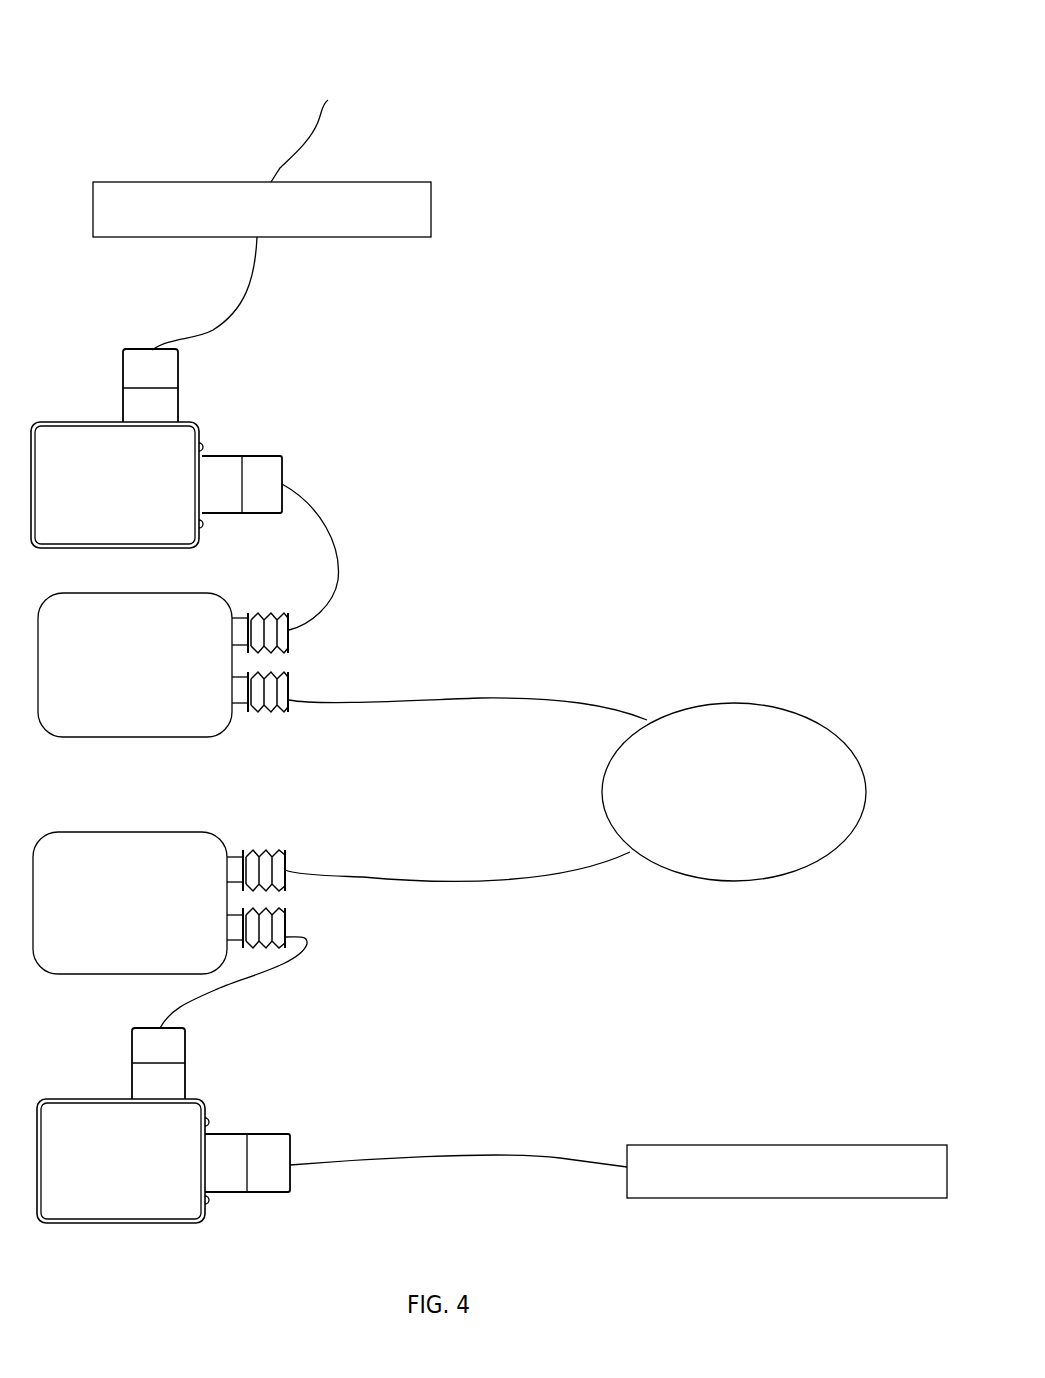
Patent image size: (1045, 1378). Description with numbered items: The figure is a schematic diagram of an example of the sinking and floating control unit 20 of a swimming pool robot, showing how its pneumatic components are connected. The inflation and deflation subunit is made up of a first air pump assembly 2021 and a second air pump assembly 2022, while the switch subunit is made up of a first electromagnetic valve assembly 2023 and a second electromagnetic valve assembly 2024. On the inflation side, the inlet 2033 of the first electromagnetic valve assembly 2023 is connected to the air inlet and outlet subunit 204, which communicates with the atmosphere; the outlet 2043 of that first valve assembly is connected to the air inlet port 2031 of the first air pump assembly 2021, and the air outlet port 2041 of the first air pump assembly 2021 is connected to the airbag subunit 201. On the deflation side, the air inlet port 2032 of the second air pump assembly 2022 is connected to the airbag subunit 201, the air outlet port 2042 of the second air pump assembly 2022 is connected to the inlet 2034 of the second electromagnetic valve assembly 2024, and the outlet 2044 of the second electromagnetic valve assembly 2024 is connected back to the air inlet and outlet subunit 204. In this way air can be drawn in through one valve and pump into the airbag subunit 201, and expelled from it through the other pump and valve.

The sinking and floating control unit 20 is at (727, 26).
The airbag subunit 201 is at (734, 792).
The air inlet and outlet subunit 204 is at (520, 690).
The first air pump assembly 2021 is at (202, 665).
The second air pump assembly 2022 is at (197, 903).
The first electromagnetic valve assembly 2023 is at (189, 447).
The second electromagnetic valve assembly 2024 is at (193, 1124).
The air inlet port of the first air pump assembly 2031 is at (297, 633).
The air inlet port of the second air pump assembly 2032 is at (294, 864).
The inlet of the first electromagnetic valve assembly 2033 is at (178, 384).
The inlet of the second electromagnetic valve assembly 2034 is at (196, 1062).
The air outlet port of the first air pump assembly 2041 is at (299, 688).
The air outlet port of the second air pump assembly 2042 is at (292, 928).
The outlet of the first electromagnetic valve assembly 2043 is at (275, 484).
The outlet of the second electromagnetic valve assembly 2044 is at (277, 1158).